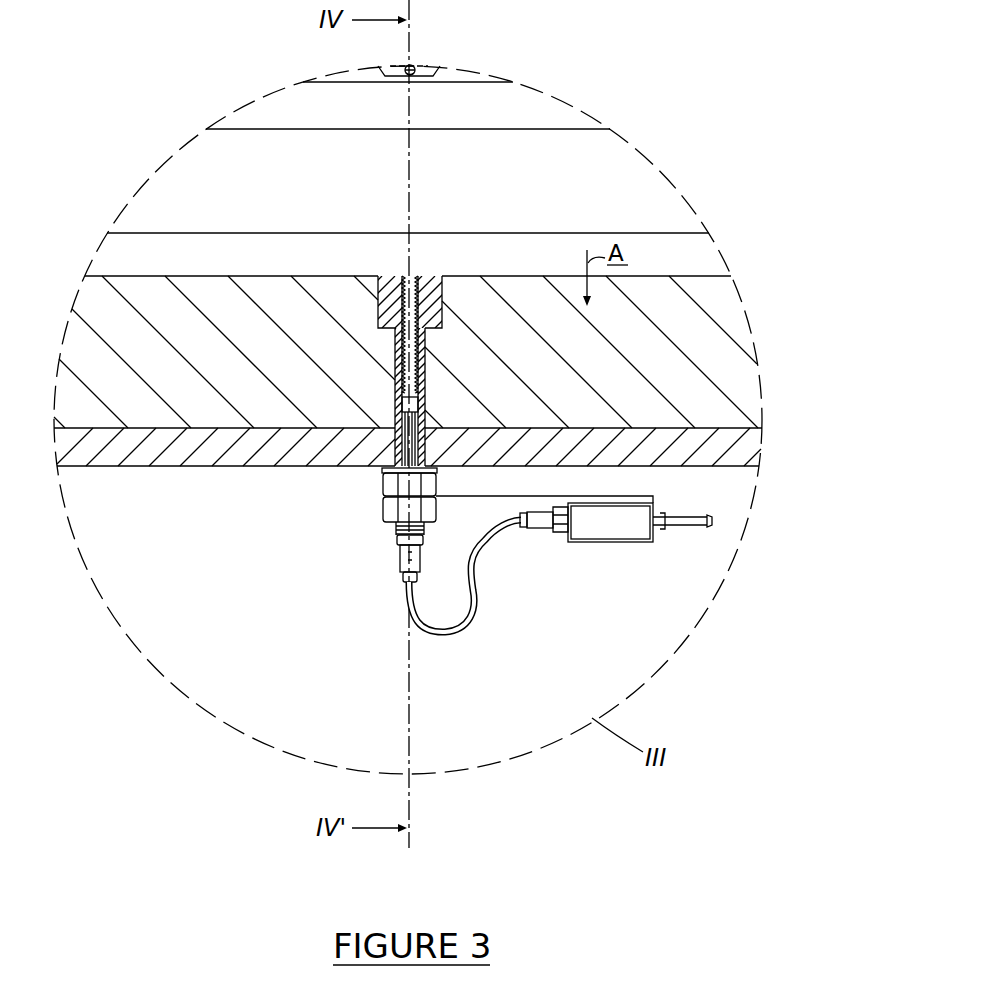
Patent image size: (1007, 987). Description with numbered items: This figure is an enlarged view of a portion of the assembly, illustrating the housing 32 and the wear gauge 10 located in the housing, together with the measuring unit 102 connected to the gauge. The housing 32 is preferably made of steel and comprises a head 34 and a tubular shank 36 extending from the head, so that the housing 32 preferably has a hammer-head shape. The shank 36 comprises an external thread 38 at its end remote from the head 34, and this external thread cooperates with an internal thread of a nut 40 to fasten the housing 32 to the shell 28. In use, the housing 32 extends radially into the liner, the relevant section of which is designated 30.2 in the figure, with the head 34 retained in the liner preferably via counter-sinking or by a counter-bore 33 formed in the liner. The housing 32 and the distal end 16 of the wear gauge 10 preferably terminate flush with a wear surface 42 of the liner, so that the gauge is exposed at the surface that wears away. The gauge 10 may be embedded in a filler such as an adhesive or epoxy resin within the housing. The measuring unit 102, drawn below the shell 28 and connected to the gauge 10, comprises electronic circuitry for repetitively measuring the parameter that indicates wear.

The wear gauge 10 is at (427, 247).
The distal end 16 is at (410, 276).
The shell 28 is at (180, 452).
The wall section 30.2 is at (745, 390).
The housing 32 is at (433, 350).
The counter-bore 33 is at (377, 312).
The head 34 is at (436, 292).
The tubular shank 36 is at (422, 400).
The external thread 38 is at (395, 528).
The nut 40 is at (384, 510).
The wear surface 42 is at (183, 276).
The measuring unit 102 is at (581, 571).